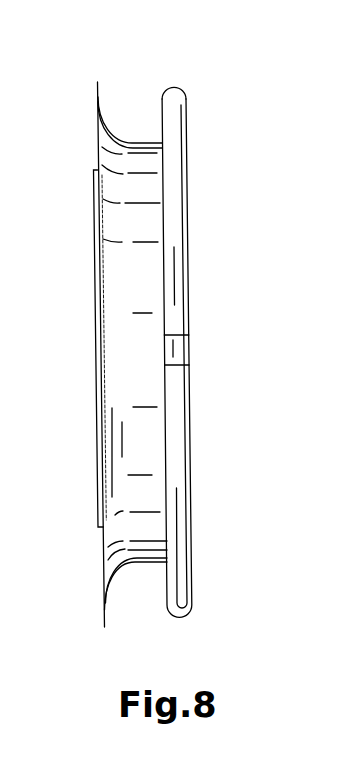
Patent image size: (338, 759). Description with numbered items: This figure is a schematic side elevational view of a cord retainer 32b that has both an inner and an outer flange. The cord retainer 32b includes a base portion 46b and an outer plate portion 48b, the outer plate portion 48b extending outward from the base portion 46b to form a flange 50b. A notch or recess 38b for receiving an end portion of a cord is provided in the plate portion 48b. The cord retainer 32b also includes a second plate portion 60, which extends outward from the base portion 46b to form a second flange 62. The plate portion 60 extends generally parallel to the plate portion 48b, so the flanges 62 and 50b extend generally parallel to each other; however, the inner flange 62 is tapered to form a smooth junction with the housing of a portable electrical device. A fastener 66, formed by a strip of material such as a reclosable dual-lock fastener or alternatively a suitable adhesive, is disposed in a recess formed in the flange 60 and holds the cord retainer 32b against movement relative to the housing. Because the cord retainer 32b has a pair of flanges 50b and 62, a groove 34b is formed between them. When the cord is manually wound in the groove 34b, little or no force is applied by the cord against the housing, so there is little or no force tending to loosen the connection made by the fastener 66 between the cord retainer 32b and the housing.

The cord retainer 32b is at (191, 274).
The groove 34b is at (147, 578).
The notch or recess 38b is at (172, 357).
The base portion 46b is at (148, 443).
The outer plate portion 48b is at (188, 124).
The flange 50b is at (161, 118).
The second plate portion 60 is at (98, 135).
The second flange 62 is at (110, 112).
The fastener 66 is at (97, 327).